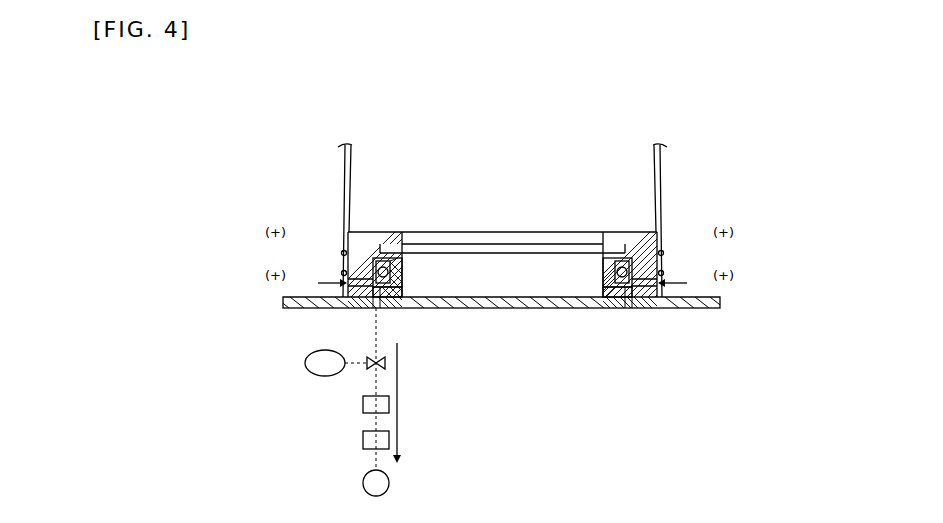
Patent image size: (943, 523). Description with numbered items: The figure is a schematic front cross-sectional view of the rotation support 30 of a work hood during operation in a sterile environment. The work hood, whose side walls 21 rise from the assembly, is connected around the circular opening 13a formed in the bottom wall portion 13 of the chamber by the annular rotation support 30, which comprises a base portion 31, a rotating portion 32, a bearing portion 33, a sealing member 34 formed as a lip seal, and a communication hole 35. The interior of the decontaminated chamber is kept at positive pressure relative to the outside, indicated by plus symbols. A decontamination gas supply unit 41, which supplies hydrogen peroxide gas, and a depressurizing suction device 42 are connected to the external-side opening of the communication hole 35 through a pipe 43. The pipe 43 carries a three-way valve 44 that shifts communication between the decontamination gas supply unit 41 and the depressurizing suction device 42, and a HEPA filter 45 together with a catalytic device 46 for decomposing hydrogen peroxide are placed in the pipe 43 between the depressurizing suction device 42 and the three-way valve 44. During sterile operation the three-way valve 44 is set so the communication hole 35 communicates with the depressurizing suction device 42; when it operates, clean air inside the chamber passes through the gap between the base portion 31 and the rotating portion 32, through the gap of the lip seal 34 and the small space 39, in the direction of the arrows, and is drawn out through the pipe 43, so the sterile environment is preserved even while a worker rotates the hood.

The bottom wall portion 13 is at (691, 310).
The circular opening 13a is at (508, 332).
The side wall 21 is at (343, 190).
The rotation support 30 is at (432, 224).
The base portion 31 is at (403, 289).
The rotating portion 32 is at (370, 240).
The bearing portion 33 is at (395, 268).
The sealing member 34 is at (341, 269).
The communication hole 35 is at (378, 311).
The small space 39 is at (395, 290).
The decontamination gas supply unit 41 is at (305, 365).
The depressurizing suction device 42 is at (363, 484).
The pipe 43 is at (372, 318).
The three-way valve 44 is at (371, 368).
The HEPA filter 45 is at (363, 407).
The catalytic device 46 is at (363, 442).